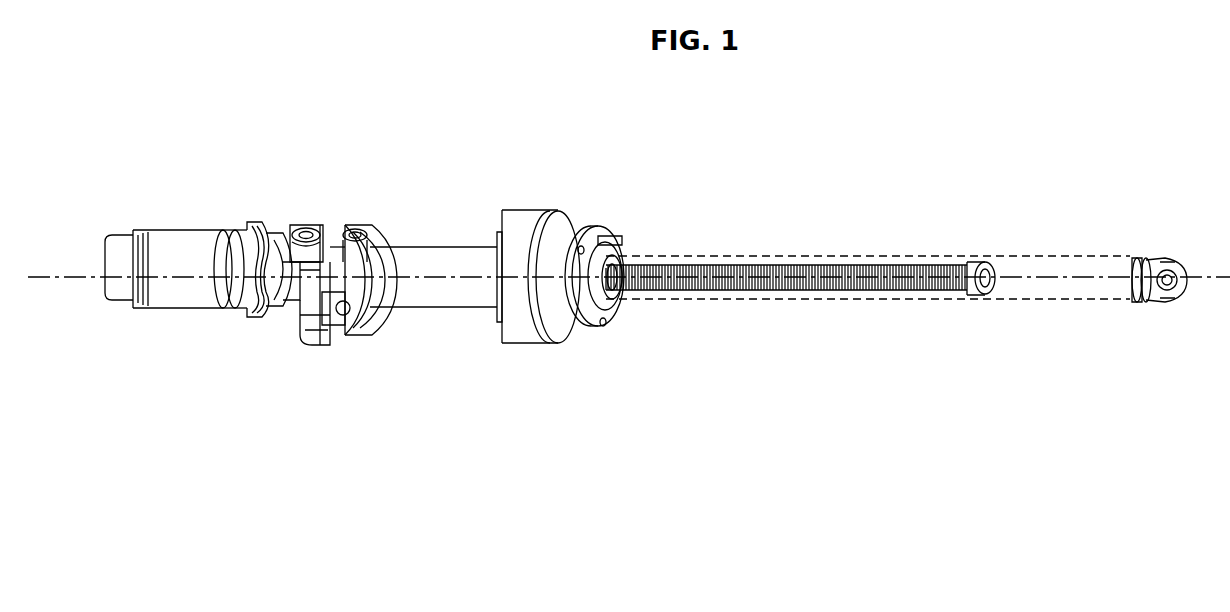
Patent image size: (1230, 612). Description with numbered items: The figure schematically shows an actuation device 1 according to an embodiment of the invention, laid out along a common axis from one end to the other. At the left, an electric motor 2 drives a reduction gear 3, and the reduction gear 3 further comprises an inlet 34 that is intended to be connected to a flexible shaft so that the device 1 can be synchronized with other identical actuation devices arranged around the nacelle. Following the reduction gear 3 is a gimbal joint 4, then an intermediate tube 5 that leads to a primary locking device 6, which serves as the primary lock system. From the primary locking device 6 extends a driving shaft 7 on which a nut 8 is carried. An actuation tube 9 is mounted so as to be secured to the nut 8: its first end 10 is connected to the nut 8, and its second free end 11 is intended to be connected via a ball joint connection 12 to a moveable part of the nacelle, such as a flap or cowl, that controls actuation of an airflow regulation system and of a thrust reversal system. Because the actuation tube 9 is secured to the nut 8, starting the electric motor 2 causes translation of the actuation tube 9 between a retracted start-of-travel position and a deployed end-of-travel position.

The actuation device 1 is at (690, 160).
The electric motor 2 is at (190, 243).
The reduction gear 3 is at (290, 302).
The inlet 34 is at (303, 232).
The gimbal joint 4 is at (352, 232).
The intermediate tube 5 is at (452, 262).
The primary locking device 6 is at (547, 235).
The driving shaft 7 is at (824, 270).
The nut 8 is at (615, 300).
The actuation tube 9 is at (1052, 270).
The first end 10 is at (613, 260).
The second free end 11 is at (1137, 262).
The ball joint connection 12 is at (1150, 300).